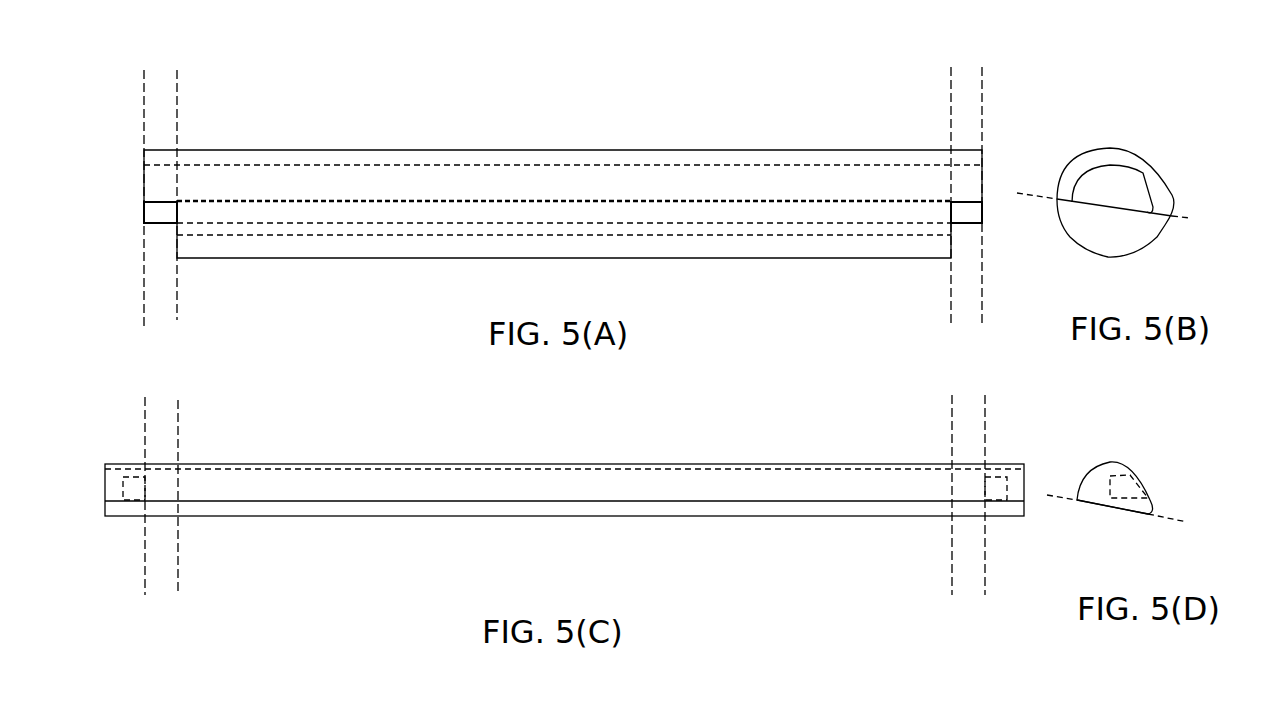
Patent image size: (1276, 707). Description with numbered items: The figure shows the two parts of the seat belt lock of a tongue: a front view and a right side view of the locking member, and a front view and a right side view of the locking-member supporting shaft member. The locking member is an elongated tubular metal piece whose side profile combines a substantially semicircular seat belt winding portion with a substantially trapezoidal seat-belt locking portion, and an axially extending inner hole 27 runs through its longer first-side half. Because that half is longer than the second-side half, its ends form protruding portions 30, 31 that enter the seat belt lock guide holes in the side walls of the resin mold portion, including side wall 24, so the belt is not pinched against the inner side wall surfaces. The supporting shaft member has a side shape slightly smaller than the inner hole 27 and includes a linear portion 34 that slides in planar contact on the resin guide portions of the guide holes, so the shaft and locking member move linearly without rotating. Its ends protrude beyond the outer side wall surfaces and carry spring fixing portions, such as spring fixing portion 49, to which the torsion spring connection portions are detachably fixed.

The side wall 24 is at (178, 318).
The inner hole 27 is at (1130, 178).
The protruding portion 30 is at (963, 180).
The protruding portion 31 is at (162, 150).
The linear portion 34 is at (1116, 512).
The spring fixing portion 49 is at (125, 505).